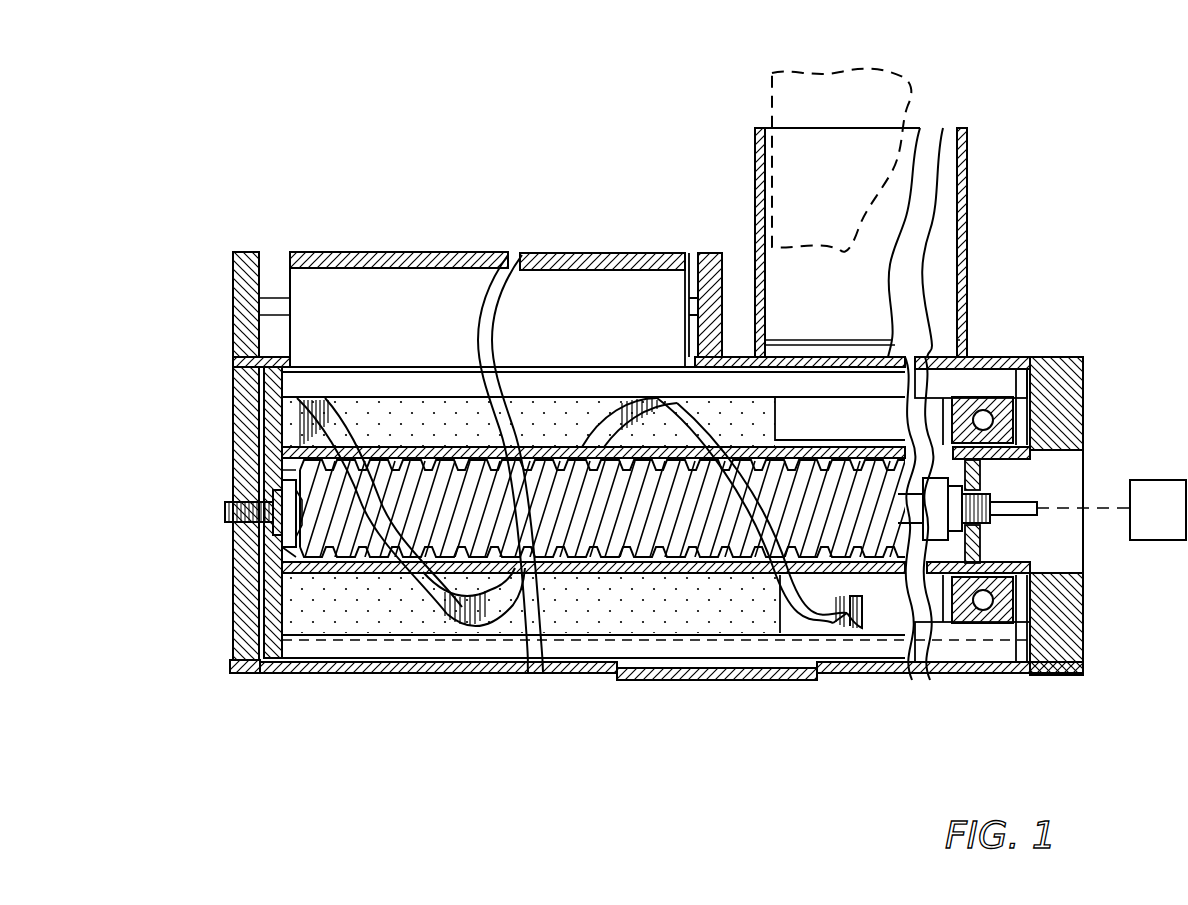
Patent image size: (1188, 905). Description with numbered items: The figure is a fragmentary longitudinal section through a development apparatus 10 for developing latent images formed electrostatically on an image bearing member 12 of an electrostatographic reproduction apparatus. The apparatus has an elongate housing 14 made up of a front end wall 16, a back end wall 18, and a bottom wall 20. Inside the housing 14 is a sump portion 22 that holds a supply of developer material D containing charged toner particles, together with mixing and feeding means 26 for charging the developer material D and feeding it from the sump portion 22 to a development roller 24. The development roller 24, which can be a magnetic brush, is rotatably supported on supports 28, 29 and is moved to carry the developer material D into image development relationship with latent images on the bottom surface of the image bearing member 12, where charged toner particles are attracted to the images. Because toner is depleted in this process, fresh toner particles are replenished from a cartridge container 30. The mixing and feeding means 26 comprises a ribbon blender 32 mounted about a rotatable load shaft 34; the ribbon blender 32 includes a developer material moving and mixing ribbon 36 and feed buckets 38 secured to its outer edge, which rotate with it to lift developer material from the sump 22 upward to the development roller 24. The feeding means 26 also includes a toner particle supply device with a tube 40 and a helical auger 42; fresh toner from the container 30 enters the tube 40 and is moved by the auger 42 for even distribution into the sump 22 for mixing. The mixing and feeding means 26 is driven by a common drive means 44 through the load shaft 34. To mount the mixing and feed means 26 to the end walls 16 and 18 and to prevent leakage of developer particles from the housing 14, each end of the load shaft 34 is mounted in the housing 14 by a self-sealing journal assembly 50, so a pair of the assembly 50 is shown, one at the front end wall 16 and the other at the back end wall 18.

The development apparatus 10 is at (418, 251).
The image bearing member 12 is at (578, 252).
The elongate housing 14 is at (232, 389).
The front end wall 16 is at (232, 606).
The back end wall 18 is at (1068, 606).
The bottom wall 20 is at (413, 666).
The sump portion 22 is at (658, 618).
The development roller 24 is at (402, 313).
The mixing and feeding means 26 is at (572, 578).
The support 28 is at (233, 268).
The support 29 is at (707, 252).
The cartridge container 30 is at (770, 110).
The ribbon blender 32 is at (764, 593).
The load shaft 34 is at (885, 572).
The developer material moving and mixing ribbon 36 is at (330, 423).
The feed buckets 38 is at (672, 652).
The tube 40 is at (745, 447).
The helical auger 42 is at (507, 458).
The common drive means 44 is at (1169, 522).
The self-sealing journal assembly 50 is at (225, 512).
The developer material D is at (334, 622).